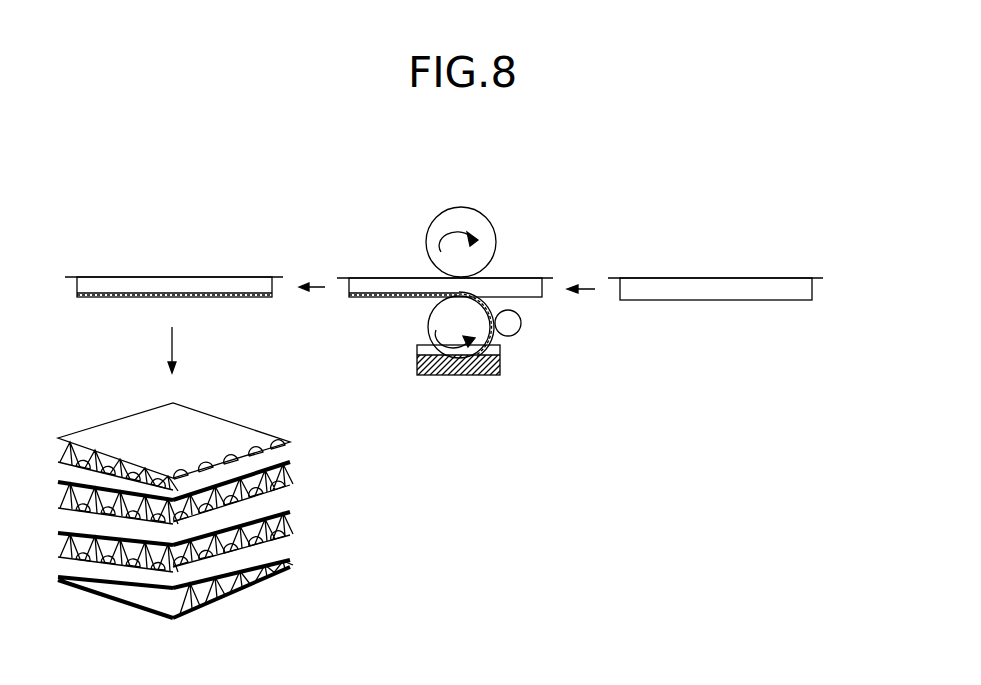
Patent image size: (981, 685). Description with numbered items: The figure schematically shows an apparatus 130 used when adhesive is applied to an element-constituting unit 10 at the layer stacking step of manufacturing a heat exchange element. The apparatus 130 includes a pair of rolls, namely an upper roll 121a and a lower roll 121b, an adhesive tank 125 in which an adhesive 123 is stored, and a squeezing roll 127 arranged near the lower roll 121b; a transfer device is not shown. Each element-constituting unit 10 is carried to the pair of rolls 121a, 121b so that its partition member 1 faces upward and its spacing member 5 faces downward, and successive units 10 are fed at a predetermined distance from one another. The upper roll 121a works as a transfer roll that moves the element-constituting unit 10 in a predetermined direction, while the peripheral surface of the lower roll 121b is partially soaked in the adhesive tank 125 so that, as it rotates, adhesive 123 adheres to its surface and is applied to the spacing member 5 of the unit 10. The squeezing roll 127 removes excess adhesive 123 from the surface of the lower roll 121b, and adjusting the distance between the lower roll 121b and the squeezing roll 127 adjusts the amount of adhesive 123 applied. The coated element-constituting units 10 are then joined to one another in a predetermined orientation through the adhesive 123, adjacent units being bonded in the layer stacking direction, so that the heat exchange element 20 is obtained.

The partition member 1 is at (276, 275).
The spacing member 5 is at (133, 287).
The element-constituting unit 10 is at (452, 259).
The heat exchange element 20 is at (236, 397).
The adhesive 123 is at (100, 298).
The adhesive tank 125 is at (500, 365).
The squeezing roll 127 is at (521, 323).
The upper roll 121a is at (433, 250).
The lower roll 121b is at (438, 323).
The apparatus 130 is at (499, 253).